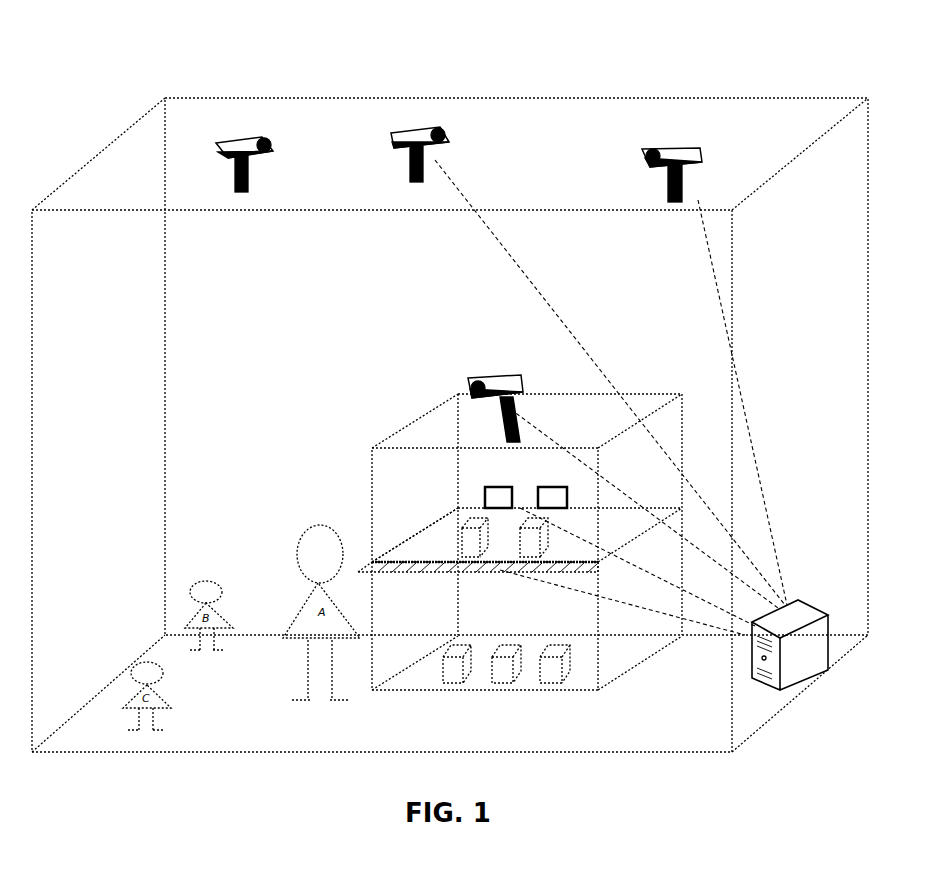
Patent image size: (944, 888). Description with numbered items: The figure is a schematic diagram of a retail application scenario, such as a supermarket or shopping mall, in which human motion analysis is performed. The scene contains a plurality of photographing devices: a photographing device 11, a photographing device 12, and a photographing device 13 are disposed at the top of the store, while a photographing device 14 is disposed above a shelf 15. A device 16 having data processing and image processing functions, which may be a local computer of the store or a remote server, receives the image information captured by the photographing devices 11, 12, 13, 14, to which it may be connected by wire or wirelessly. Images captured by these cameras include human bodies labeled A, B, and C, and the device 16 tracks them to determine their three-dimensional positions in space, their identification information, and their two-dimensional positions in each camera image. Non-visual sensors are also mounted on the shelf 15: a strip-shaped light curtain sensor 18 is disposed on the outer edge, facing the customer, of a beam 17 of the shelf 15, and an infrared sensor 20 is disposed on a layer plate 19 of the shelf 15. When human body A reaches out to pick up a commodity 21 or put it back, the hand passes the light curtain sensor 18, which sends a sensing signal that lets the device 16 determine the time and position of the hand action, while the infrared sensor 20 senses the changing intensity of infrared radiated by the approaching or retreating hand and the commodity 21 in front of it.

The photographing device 11 is at (258, 172).
The photographing device 12 is at (445, 128).
The photographing device 13 is at (690, 150).
The photographing device 14 is at (470, 383).
The shelf 15 is at (404, 428).
The device 16 is at (800, 600).
The beam 17 is at (468, 558).
The light curtain sensor 18 is at (470, 567).
The layer plate 19 is at (405, 535).
The infrared sensor 20 is at (485, 490).
The commodity 21 is at (470, 528).